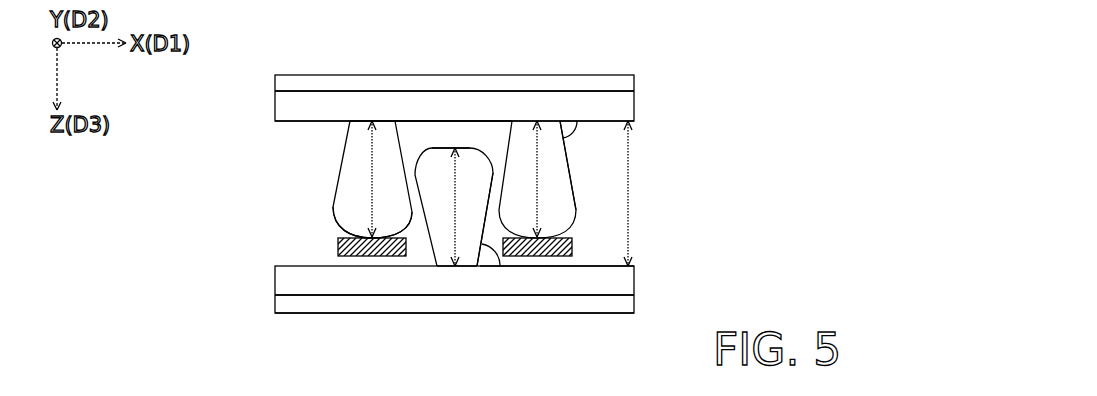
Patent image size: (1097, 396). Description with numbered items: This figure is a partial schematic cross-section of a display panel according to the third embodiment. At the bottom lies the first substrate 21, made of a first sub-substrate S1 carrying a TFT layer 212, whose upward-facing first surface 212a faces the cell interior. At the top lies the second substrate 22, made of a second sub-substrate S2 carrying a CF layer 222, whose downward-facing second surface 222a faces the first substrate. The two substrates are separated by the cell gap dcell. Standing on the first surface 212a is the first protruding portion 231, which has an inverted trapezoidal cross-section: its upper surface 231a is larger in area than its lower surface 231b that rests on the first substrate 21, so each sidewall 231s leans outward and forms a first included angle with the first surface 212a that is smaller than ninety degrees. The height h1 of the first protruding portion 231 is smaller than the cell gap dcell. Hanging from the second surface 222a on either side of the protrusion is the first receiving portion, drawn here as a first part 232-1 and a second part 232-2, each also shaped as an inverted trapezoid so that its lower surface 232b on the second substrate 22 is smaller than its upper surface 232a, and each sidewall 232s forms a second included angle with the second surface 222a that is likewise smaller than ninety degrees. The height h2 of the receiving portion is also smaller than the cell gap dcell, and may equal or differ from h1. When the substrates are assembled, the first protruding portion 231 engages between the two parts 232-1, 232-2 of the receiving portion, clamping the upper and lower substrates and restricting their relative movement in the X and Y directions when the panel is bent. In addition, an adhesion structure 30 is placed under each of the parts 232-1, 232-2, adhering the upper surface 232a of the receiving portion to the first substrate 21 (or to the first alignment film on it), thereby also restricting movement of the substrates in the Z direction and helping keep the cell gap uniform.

The second substrate 22 is at (208, 68).
The second sub-substrate S2 is at (276, 82).
The CF layer 222 is at (276, 113).
The second surface 222a is at (509, 121).
The first substrate 21 is at (210, 260).
The TFT layer 212 is at (276, 273).
The first sub-substrate S1 is at (276, 302).
The first surface 212a is at (603, 268).
The first protruding portion 231 is at (441, 252).
The upper surface of the first protruding portion 231a is at (443, 147).
The lower surface of the first protruding portion 231b is at (435, 268).
The sidewall of the first protruding portion 231s is at (481, 241).
The first part of the first receiving portion 232-1 is at (347, 173).
The second part of the first receiving portion 232-2 is at (564, 218).
The upper surface of the first receiving portion 232a is at (362, 238).
The lower surface of the first receiving portion 232b is at (360, 120).
The sidewall of the first receiving portion 232s is at (563, 153).
The adhesion structure 30 is at (338, 243).
The height of the first protruding portion h1 is at (468, 207).
The height of the first receiving portion h2 is at (467, 179).
The cell gap dcell is at (647, 193).